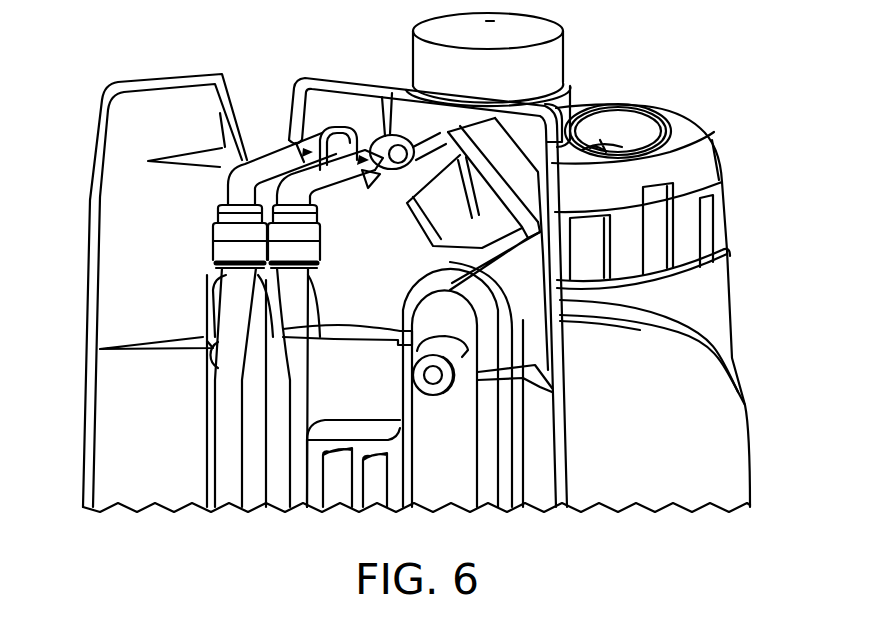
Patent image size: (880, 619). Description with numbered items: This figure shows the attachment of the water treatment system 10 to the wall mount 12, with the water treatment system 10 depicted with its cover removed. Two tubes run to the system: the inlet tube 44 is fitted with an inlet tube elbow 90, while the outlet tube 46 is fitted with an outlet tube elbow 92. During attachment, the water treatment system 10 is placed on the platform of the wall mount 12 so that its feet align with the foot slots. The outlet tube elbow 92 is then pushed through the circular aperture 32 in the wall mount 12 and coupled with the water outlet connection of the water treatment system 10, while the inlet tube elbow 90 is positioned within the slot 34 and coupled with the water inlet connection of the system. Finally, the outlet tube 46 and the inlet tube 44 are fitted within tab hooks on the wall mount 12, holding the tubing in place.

The water treatment system 10 is at (707, 290).
The wall mount 12 is at (117, 125).
The circular aperture 32 is at (388, 133).
The slot 34 is at (273, 106).
The inlet tube 44 is at (237, 300).
The outlet tube 46 is at (282, 351).
The inlet tube elbow 90 is at (230, 190).
The outlet tube elbow 92 is at (326, 179).